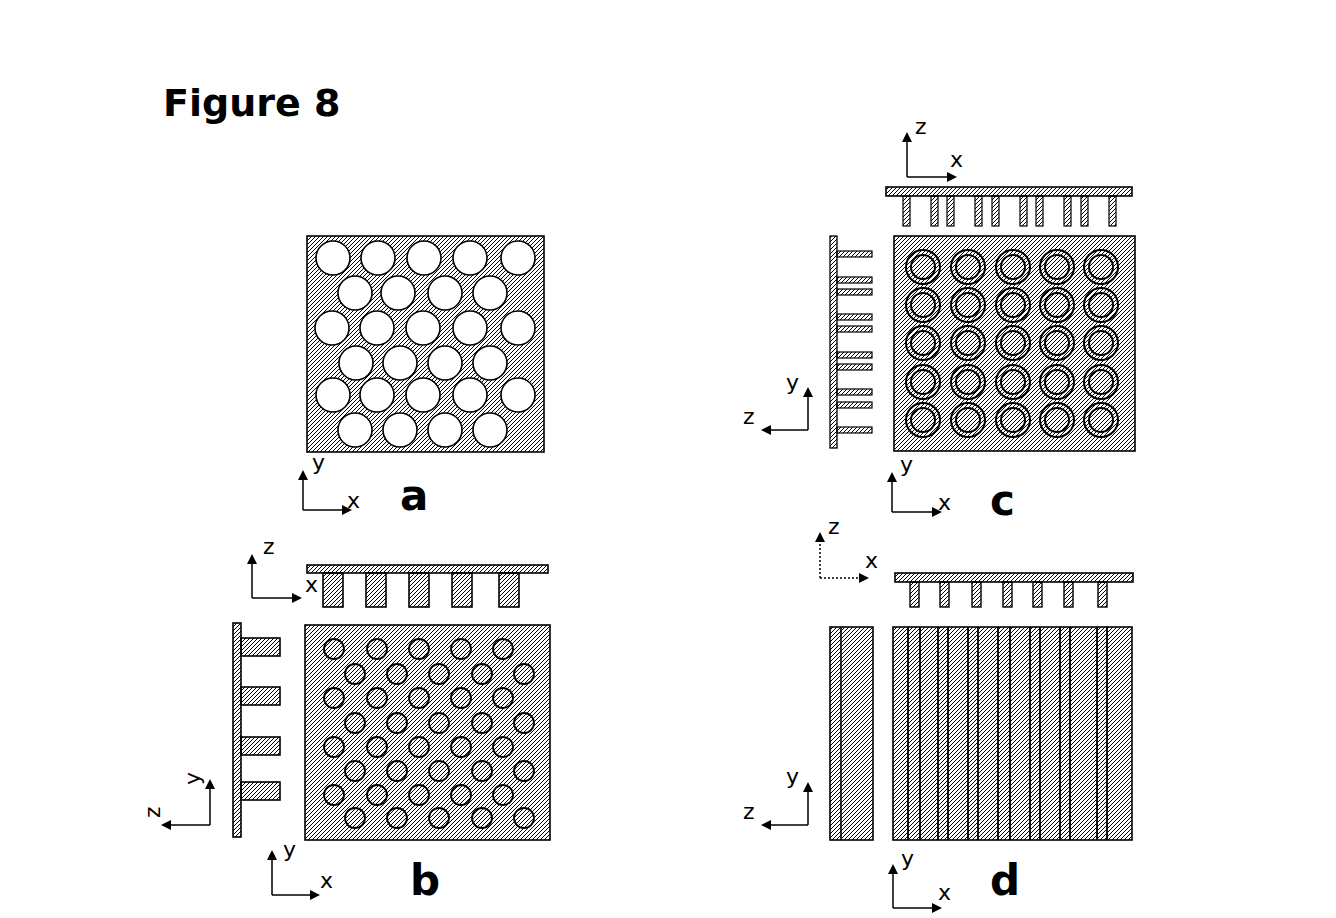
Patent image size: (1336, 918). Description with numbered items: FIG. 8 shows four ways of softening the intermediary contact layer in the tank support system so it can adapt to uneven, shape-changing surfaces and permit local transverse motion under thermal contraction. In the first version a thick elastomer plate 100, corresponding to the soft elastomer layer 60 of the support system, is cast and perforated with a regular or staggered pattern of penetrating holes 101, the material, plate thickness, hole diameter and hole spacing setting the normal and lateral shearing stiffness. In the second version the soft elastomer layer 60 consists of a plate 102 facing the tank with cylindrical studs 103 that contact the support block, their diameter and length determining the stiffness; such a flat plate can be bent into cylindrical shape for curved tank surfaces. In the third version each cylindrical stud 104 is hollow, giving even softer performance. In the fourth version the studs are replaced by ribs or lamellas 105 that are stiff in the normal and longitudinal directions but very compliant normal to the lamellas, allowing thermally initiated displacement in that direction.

The soft elastomer layer 60 is at (545, 347).
The thick elastomer plate 100 is at (318, 358).
The penetrating holes 101 is at (472, 255).
The plate 102 is at (548, 566).
The cylindrical studs 103 is at (522, 673).
The hollow cylindrical stud 104 is at (853, 278).
The wall stripes 105 is at (1045, 590).